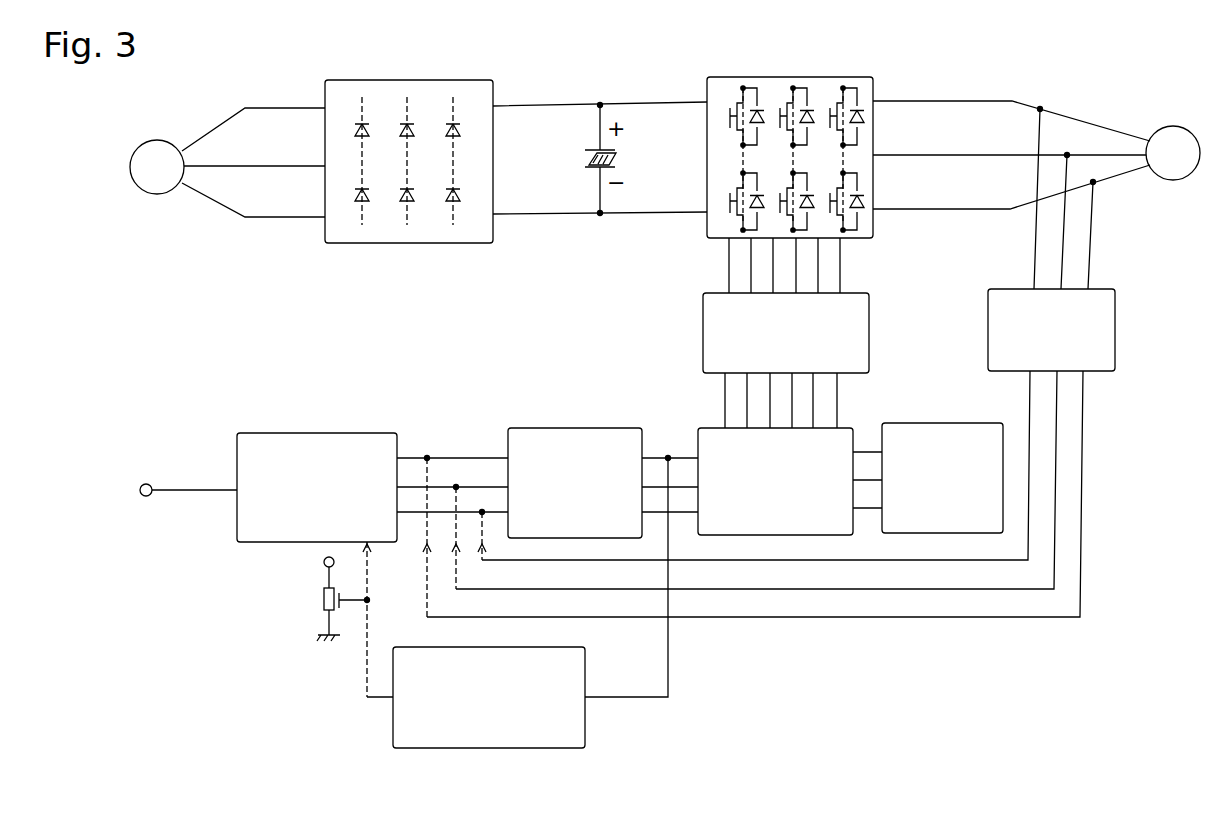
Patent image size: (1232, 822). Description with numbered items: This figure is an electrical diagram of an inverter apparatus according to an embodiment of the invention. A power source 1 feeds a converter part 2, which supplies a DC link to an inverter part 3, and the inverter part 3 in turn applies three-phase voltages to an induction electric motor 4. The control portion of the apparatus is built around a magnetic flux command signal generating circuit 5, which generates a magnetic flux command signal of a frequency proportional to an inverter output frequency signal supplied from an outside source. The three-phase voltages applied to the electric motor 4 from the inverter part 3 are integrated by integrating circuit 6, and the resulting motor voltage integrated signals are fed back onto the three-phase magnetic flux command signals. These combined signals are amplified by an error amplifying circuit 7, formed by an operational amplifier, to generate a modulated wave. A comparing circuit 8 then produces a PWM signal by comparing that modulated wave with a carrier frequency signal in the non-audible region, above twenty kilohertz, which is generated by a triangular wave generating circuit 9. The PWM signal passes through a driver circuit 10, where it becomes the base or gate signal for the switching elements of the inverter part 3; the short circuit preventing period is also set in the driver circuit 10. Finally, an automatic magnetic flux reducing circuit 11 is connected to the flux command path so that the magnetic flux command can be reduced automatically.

The power source 1 is at (146, 139).
The converter part 2 is at (495, 80).
The inverter part 3 is at (873, 77).
The induction electric motor 4 is at (1191, 133).
The magnetic flux command signal generating circuit 5 is at (397, 433).
The integrating circuit 6 is at (1115, 294).
The error amplifying circuit 7 is at (615, 428).
The comparing circuit 8 is at (855, 430).
The triangular wave generating circuit 9 is at (967, 423).
The driver circuit 10 is at (869, 296).
The automatic magnetic flux reducing circuit 11 is at (585, 735).